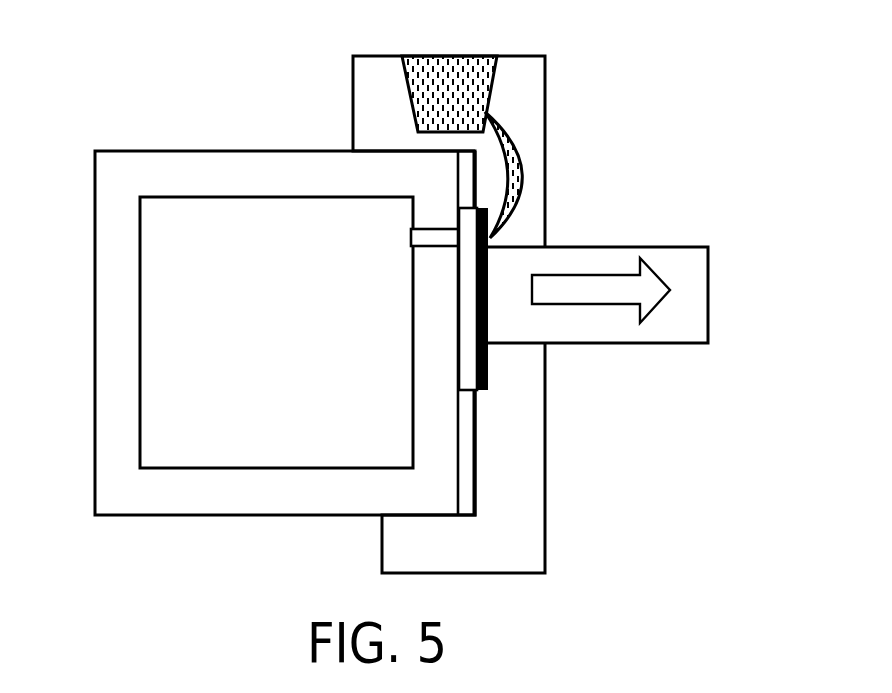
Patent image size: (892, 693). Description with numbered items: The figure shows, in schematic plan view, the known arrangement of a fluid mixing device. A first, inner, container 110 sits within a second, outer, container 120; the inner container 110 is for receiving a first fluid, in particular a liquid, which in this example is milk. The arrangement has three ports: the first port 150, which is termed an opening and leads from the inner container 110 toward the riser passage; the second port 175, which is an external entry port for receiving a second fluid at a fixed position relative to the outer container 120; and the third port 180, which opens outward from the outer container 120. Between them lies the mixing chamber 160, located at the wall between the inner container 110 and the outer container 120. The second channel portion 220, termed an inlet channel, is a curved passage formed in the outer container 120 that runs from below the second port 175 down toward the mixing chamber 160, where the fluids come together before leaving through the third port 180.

The first, inner, container 110 is at (147, 150).
The second, outer, container 120 is at (545, 463).
The first port 150 is at (411, 238).
The mixing chamber 160 is at (465, 309).
The second port 175 is at (477, 55).
The third port 180 is at (635, 247).
The second channel portion 220 is at (525, 158).